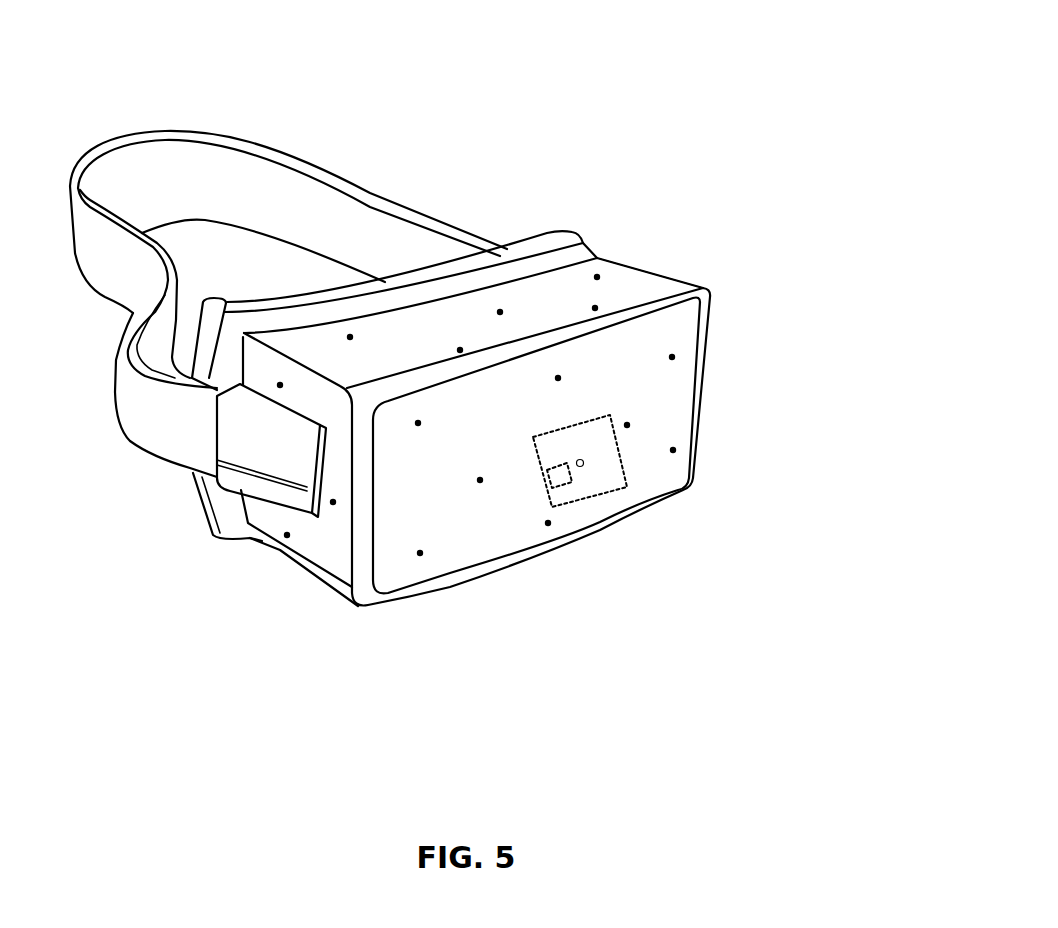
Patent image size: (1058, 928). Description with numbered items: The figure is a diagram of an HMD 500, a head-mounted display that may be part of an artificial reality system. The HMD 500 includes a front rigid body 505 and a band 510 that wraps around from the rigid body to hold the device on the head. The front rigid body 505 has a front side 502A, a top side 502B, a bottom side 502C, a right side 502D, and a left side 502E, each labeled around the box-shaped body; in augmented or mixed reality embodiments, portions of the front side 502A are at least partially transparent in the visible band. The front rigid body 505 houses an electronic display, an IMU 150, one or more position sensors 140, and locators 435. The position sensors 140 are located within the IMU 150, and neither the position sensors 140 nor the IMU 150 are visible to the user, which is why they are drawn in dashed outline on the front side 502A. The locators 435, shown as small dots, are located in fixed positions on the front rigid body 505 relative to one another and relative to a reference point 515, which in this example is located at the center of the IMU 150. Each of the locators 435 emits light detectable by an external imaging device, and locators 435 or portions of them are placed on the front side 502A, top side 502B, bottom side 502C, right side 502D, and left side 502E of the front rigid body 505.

The HMD 500 is at (63, 34).
The band 510 is at (402, 204).
The front rigid body 505 is at (710, 338).
The front side 502A is at (442, 562).
The top side 502B is at (645, 290).
The bottom side 502C is at (262, 552).
The right side 502D is at (338, 547).
The left side 502E is at (647, 290).
The locators 435 is at (673, 449).
The IMU 150 is at (622, 472).
The position sensors 140 is at (560, 477).
The reference point 515 is at (580, 467).